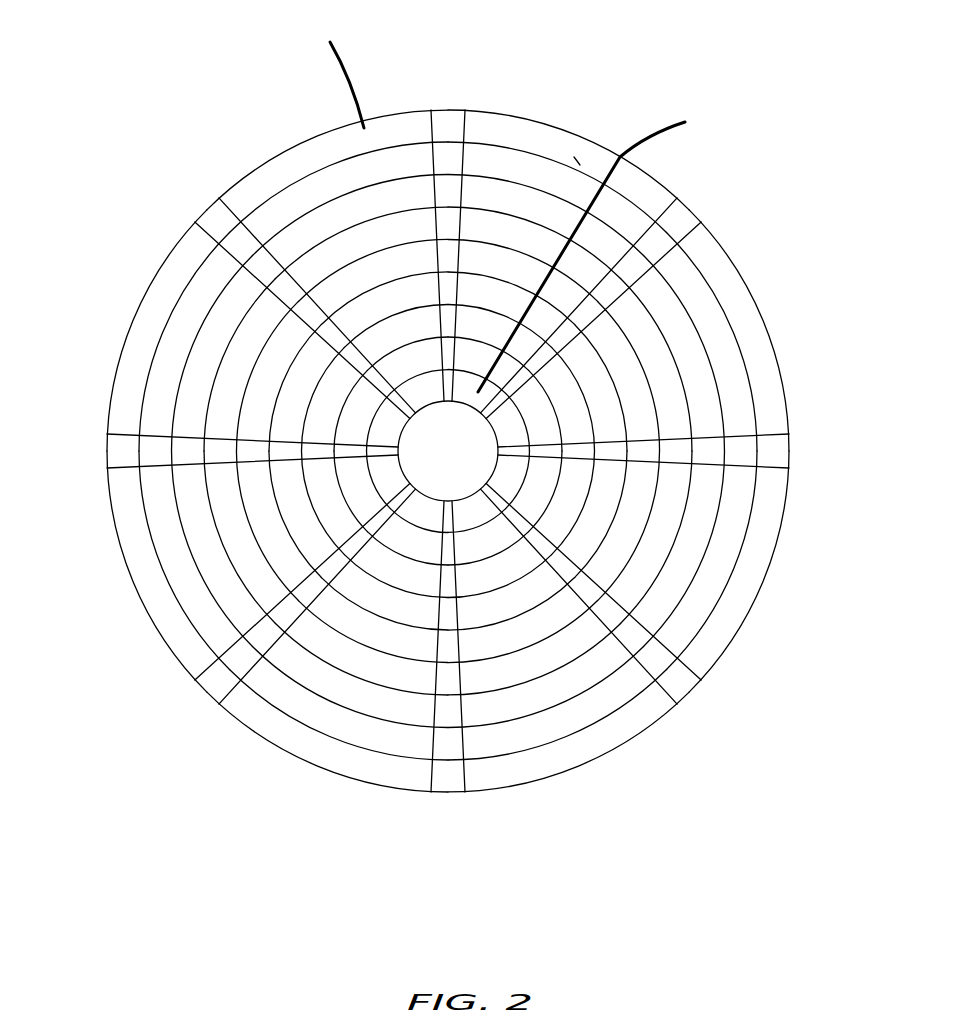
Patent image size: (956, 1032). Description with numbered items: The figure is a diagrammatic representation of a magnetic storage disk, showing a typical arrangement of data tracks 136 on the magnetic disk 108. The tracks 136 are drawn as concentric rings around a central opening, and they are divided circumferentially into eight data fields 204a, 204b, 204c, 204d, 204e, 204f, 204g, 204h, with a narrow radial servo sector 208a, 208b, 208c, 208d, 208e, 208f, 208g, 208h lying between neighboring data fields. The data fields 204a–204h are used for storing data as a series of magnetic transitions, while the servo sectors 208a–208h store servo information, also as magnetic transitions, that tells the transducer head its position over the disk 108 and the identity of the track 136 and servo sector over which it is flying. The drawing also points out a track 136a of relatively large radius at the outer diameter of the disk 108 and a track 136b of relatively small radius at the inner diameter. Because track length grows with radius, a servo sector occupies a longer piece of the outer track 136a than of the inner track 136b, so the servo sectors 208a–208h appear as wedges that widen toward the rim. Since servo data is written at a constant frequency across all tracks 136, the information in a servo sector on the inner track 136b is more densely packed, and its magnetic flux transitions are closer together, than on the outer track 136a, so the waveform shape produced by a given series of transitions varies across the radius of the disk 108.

The magnetic disk 108 is at (403, 111).
The data tracks 136 is at (562, 163).
The track at outer diameter 136a is at (333, 72).
The track at inner diameter 136b is at (609, 251).
The data field 204a is at (528, 122).
The data field 204b is at (737, 273).
The data field 204c is at (763, 587).
The data field 204d is at (627, 742).
The data field 204e is at (310, 760).
The data field 204f is at (133, 582).
The data field 204g is at (117, 372).
The data field 204h is at (322, 134).
The servo sector 208a is at (452, 110).
The servo sector 208b is at (692, 220).
The servo sector 208c is at (790, 452).
The servo sector 208d is at (688, 690).
The servo sector 208e is at (450, 795).
The servo sector 208f is at (210, 685).
The servo sector 208g is at (108, 452).
The servo sector 208h is at (208, 212).